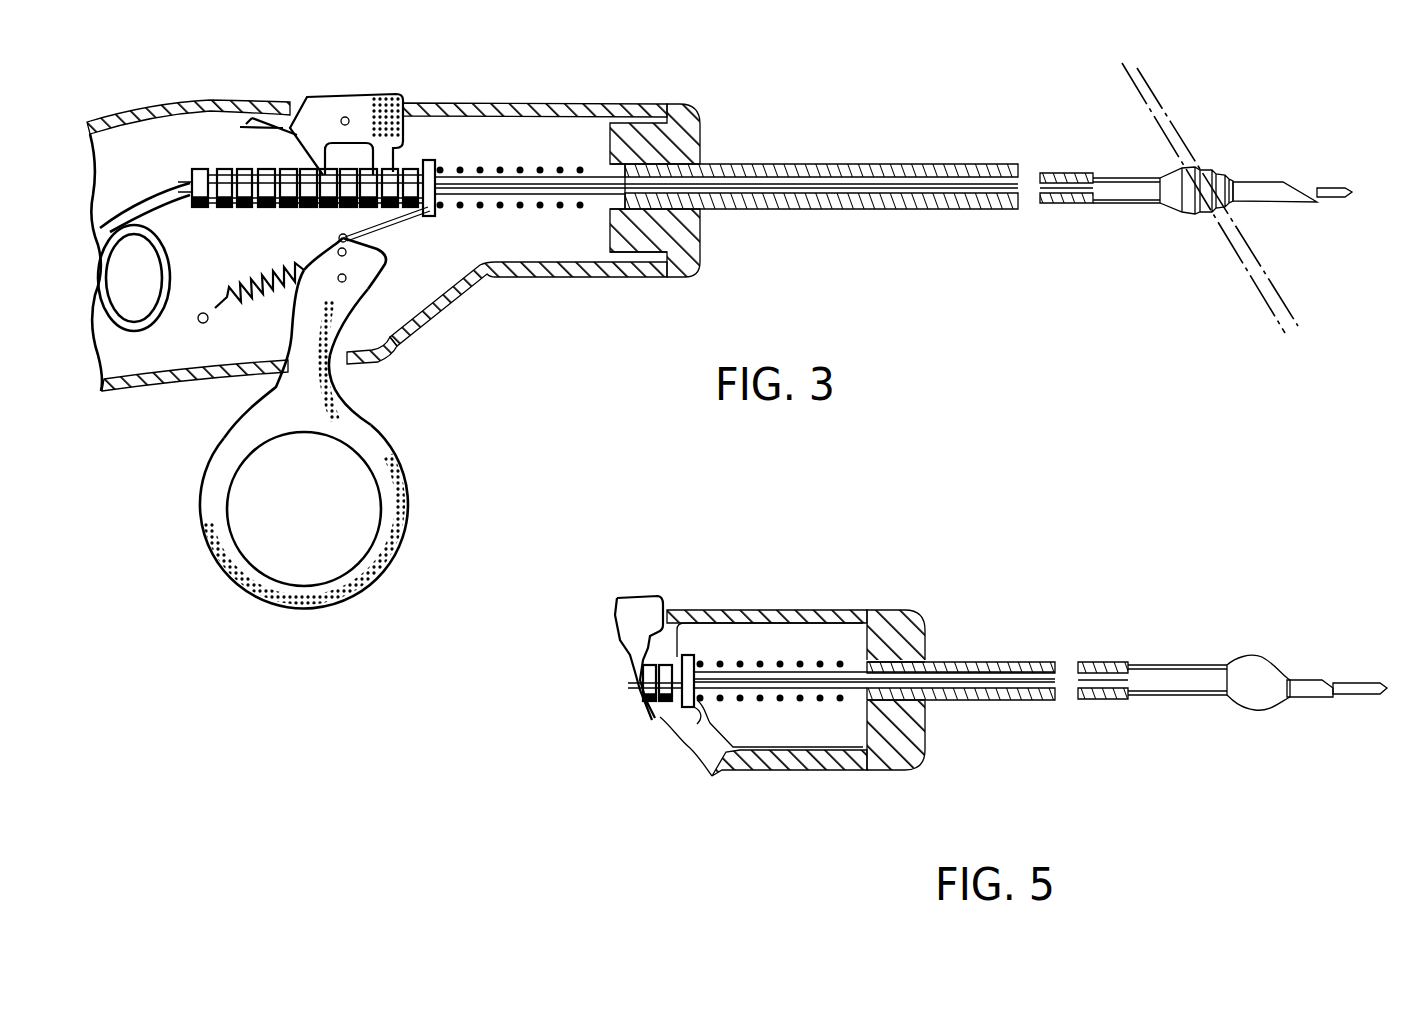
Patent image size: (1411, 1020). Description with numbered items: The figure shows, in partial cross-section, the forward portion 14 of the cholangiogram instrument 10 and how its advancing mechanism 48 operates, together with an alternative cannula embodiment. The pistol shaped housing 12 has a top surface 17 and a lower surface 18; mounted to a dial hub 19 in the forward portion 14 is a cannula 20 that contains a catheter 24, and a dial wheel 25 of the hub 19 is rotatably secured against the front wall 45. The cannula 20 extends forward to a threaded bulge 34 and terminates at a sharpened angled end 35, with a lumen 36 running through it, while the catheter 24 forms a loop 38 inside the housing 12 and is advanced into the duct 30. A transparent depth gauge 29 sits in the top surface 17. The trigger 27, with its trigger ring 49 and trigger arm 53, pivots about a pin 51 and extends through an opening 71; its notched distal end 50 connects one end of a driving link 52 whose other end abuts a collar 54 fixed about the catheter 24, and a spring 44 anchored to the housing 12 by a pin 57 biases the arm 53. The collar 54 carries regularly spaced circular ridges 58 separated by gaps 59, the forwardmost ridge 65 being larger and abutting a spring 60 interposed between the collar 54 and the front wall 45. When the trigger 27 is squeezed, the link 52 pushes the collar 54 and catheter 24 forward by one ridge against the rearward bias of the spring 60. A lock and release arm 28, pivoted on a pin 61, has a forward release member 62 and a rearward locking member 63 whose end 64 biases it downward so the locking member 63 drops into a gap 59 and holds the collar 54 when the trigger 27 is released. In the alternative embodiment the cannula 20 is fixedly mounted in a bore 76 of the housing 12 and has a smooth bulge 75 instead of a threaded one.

In FIG. 3, the instrument 10 is at (572, 396).
In FIG. 5, the instrument 10 is at (1166, 549).
In FIG. 3, the housing 12 is at (103, 393).
In FIG. 5, the housing 12 is at (775, 779).
In FIG. 3, the forward portion 14 is at (700, 122).
In FIG. 5, the forward portion 14 is at (927, 625).
In FIG. 3, the top surface 17 is at (158, 104).
In FIG. 3, the lower surface 18 is at (165, 376).
In FIG. 3, the dial hub 19 is at (700, 152).
In FIG. 3, the cannula 20 is at (880, 164).
In FIG. 5, the cannula 20 is at (633, 597).
In FIG. 3, the catheter 24 is at (1340, 188).
In FIG. 5, the catheter 24 is at (1350, 683).
In FIG. 3, the dial wheel 25 is at (643, 254).
In FIG. 3, the trigger 27 is at (240, 593).
In FIG. 3, the lock and release arm 28 is at (346, 117).
In FIG. 3, the depth gauge 29 is at (490, 104).
In FIG. 5, the depth gauge 29 is at (800, 610).
In FIG. 3, the duct 30 is at (1300, 320).
In FIG. 3, the threaded bulge 34 is at (1210, 170).
In FIG. 3, the angled end 35 is at (1290, 181).
In FIG. 5, the angled end 35 is at (1310, 680).
In FIG. 3, the lumen 36 is at (1018, 172).
In FIG. 5, the lumen 36 is at (1110, 666).
In FIG. 3, the loop 38 is at (140, 250).
In FIG. 3, the spring 44 is at (250, 300).
In FIG. 3, the front wall 45 is at (695, 250).
In FIG. 3, the advancing mechanism 48 is at (463, 266).
In FIG. 3, the trigger ring 49 is at (381, 524).
In FIG. 3, the distal end 50 is at (346, 278).
In FIG. 3, the pin 51 is at (370, 268).
In FIG. 3, the driving link 52 is at (395, 220).
In FIG. 3, the trigger arm 53 is at (318, 372).
In FIG. 3, the collar 54 is at (218, 208).
In FIG. 5, the collar 54 is at (655, 715).
In FIG. 3, the pin 57 is at (196, 322).
In FIG. 3, the ridges 58 is at (262, 210).
In FIG. 5, the ridges 58 is at (678, 615).
In FIG. 3, the gap 59 is at (305, 210).
In FIG. 5, the gap 59 is at (672, 730).
In FIG. 3, the spring 60 is at (545, 168).
In FIG. 5, the spring 60 is at (770, 663).
In FIG. 3, the pin 61 is at (379, 115).
In FIG. 3, the release member 62 is at (430, 162).
In FIG. 5, the release member 62 is at (640, 657).
In FIG. 3, the locking member 63 is at (322, 152).
In FIG. 3, the end 64 is at (250, 119).
In FIG. 3, the forwardmost ridge 65 is at (445, 168).
In FIG. 5, the forwardmost ridge 65 is at (703, 712).
In FIG. 3, the opening 71 is at (392, 350).
In FIG. 5, the bulge 75 is at (1255, 660).
In FIG. 5, the bore 76 is at (930, 668).